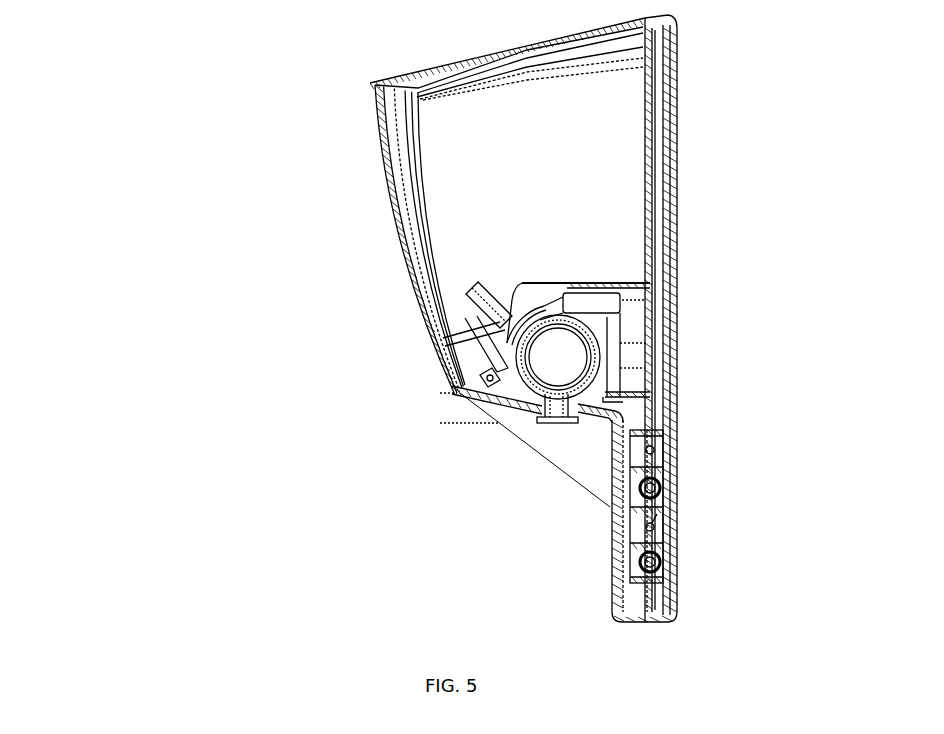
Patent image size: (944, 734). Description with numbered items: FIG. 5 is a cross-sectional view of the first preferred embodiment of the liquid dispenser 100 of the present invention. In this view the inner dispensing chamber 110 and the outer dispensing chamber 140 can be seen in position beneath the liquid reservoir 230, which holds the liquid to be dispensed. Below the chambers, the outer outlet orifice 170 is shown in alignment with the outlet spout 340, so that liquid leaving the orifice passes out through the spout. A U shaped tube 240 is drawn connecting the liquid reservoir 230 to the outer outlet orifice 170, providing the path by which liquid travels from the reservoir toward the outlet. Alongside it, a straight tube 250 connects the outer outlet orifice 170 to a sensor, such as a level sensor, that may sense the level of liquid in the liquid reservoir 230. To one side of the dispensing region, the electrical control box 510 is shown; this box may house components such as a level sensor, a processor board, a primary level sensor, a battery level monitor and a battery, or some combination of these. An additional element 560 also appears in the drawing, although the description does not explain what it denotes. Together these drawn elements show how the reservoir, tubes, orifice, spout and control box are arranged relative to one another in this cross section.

The door assembly 100 is at (782, 656).
The inner dispensing chamber 110 is at (585, 342).
The outer dispensing chamber 140 is at (517, 367).
The outer outlet orifice 170 is at (560, 405).
The liquid reservoir 230 is at (487, 192).
The U shaped tube 240 is at (470, 297).
The straight tube 250 is at (603, 318).
The outlet spout 340 is at (540, 410).
The electrical control box 510 is at (657, 482).
The wire 560 is at (321, 450).